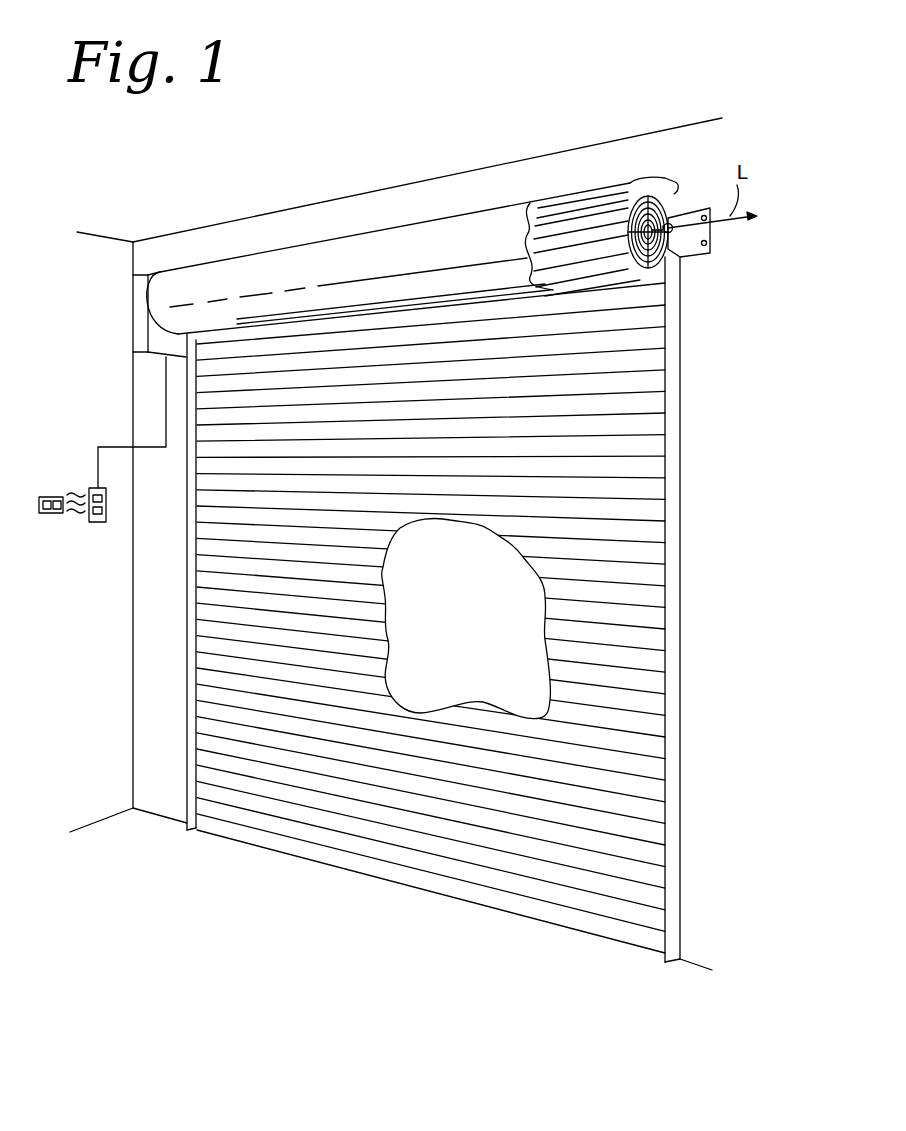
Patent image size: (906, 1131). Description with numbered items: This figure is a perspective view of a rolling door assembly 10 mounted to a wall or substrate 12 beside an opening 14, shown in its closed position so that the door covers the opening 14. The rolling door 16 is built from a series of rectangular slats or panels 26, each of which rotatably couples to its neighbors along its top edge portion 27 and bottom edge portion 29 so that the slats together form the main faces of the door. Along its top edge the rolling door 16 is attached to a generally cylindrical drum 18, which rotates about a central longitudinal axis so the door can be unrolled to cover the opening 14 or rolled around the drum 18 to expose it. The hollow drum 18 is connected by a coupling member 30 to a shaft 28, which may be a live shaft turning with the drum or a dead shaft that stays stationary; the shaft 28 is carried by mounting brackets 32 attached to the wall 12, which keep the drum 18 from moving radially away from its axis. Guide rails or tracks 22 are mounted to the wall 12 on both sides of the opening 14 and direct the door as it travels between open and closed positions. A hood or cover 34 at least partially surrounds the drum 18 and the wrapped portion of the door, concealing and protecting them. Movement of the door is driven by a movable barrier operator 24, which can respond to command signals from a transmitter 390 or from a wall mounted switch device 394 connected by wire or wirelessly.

The rolling door assembly 10 is at (697, 357).
The wall or substrate 12 is at (150, 564).
The opening 14 is at (453, 629).
The rolling door 16 is at (650, 857).
The drum 18 is at (646, 186).
The guide rails or tracks 22 is at (190, 665).
The movable barrier operator 24 is at (140, 275).
The slats or panels 26 is at (652, 708).
The top edge portion 27 is at (655, 758).
The shaft 28 is at (671, 224).
The bottom edge portion 29 is at (653, 802).
The coupling member 30 is at (640, 212).
The mounting brackets 32 is at (706, 238).
The hood or cover 34 is at (330, 258).
The transmitter 390 is at (55, 513).
The wall mounted switch device 394 is at (99, 522).